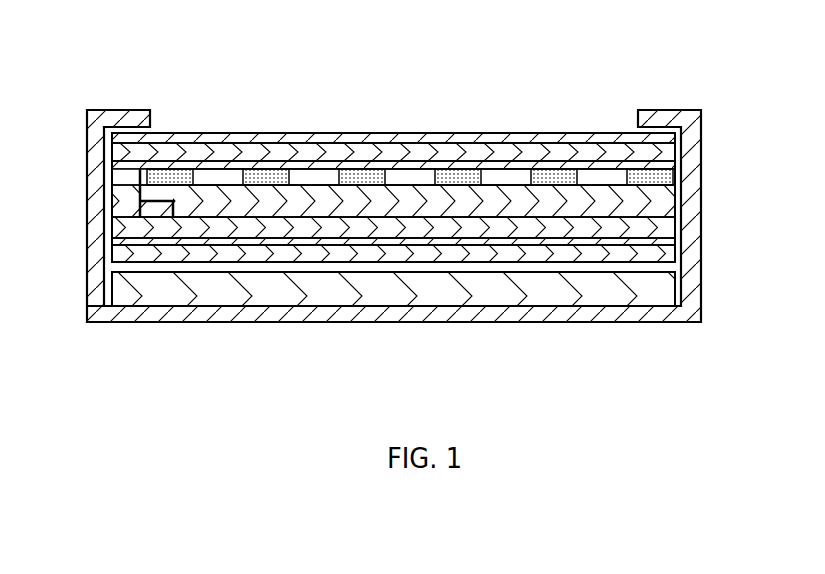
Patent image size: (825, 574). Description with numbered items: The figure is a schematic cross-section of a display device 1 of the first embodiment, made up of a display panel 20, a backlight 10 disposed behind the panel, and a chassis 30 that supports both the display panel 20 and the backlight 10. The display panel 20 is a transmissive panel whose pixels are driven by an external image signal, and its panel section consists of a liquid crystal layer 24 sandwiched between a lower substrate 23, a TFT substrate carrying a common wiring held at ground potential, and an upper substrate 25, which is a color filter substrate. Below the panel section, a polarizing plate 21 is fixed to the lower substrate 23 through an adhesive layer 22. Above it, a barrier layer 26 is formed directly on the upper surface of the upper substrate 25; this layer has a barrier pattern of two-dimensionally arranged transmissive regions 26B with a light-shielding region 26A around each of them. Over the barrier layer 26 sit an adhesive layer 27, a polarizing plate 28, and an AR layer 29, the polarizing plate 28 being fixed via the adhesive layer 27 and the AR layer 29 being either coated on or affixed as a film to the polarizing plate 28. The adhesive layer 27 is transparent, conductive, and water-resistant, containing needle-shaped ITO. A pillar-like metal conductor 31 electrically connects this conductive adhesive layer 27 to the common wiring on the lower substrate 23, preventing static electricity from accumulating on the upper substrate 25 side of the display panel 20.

The display device 1 is at (707, 50).
The backlight 10 is at (690, 316).
The display panel 20 is at (763, 92).
The polarizing plate 21 is at (666, 289).
The adhesive layer 22 is at (666, 254).
The lower substrate 23 is at (664, 242).
The liquid crystal layer 24 is at (662, 227).
The upper substrate 25 is at (662, 201).
The barrier layer 26 is at (664, 178).
The light-shielding region 26A is at (552, 177).
The transmissive region 26B is at (503, 177).
The adhesive layer 27 is at (663, 165).
The polarizing plate 28 is at (662, 152).
The AR layer 29 is at (667, 138).
The chassis 30 is at (408, 313).
The conductor 31 is at (127, 192).